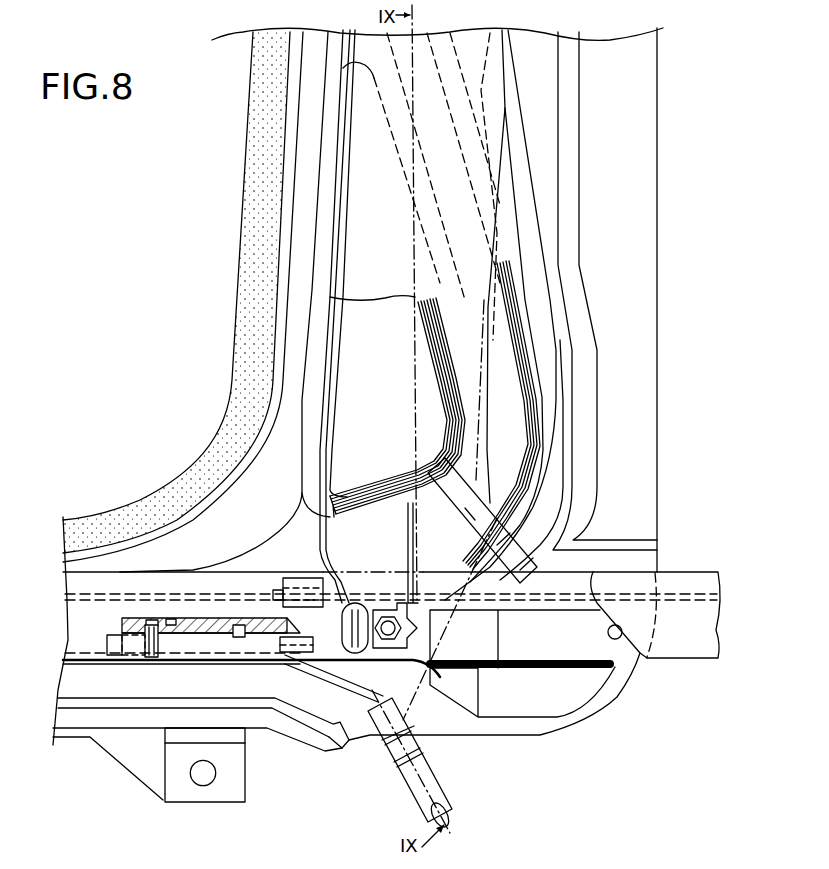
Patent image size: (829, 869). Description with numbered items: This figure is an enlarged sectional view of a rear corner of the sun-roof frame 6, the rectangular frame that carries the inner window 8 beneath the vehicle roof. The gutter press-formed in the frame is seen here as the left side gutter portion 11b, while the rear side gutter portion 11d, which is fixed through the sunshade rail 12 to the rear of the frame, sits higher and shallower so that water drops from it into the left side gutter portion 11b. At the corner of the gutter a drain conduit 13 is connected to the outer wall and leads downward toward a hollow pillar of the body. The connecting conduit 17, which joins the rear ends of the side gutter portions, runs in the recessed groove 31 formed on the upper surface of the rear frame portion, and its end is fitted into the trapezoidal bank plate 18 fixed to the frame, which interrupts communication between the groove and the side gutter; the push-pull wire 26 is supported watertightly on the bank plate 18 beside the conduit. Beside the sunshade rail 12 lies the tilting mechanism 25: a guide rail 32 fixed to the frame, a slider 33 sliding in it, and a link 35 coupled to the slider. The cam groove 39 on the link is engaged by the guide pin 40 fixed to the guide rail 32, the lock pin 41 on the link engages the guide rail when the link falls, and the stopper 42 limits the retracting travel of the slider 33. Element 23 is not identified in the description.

The sun-roof frame 6 is at (658, 205).
The inner window 8 is at (240, 208).
The left side gutter portion 11b is at (78, 683).
The rear side gutter portion 11d is at (500, 143).
The sunshade rail 12 is at (68, 582).
The drain conduit 13 is at (435, 775).
The connecting conduit 17 is at (500, 307).
The bank plate 18 is at (450, 490).
The door frame 23 is at (246, 320).
The tilting mechanism 25 is at (197, 617).
The push-pull wire 26 is at (563, 396).
The recessed groove 31 is at (552, 208).
The guide rail 32 is at (202, 648).
The slider 33 is at (301, 652).
The link 35 is at (227, 627).
The cam groove 39 is at (172, 625).
The guide pin 40 is at (153, 627).
The lock pin 41 is at (137, 657).
The stopper 42 is at (350, 613).